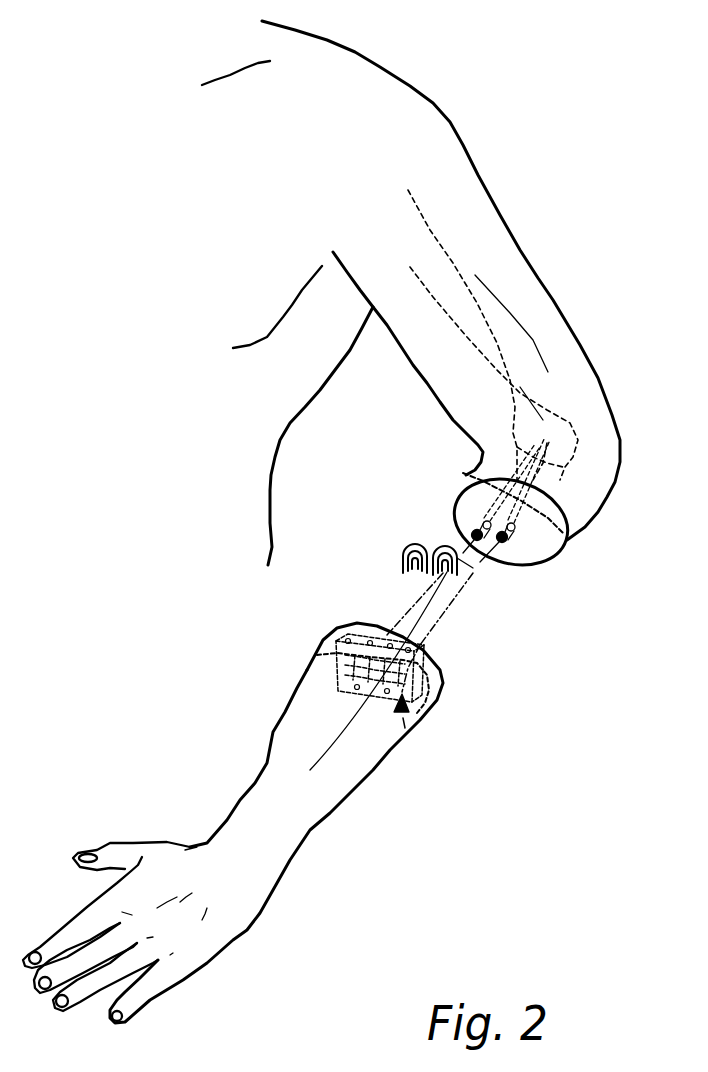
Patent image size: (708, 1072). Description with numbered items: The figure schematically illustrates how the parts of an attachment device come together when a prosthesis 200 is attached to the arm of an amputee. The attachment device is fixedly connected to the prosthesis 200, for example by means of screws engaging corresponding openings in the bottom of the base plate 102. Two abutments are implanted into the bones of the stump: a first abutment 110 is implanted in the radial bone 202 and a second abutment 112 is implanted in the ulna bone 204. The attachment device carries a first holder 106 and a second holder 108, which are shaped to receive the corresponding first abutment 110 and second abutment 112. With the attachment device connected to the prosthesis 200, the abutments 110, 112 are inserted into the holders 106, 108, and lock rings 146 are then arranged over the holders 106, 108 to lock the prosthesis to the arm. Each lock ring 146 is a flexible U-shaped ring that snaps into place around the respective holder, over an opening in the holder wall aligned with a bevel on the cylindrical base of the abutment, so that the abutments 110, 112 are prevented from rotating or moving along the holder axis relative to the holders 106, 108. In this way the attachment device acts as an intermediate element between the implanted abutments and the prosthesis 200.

The base plate 102 is at (412, 730).
The first holder 106 is at (423, 697).
The second holder 108 is at (317, 655).
The first abutment 110 is at (513, 548).
The second abutment 112 is at (457, 520).
The U-shaped locking ring 146 is at (400, 557).
The prosthesis 200 is at (307, 810).
The radial bone 202 is at (580, 557).
The ulna bone 204 is at (473, 477).